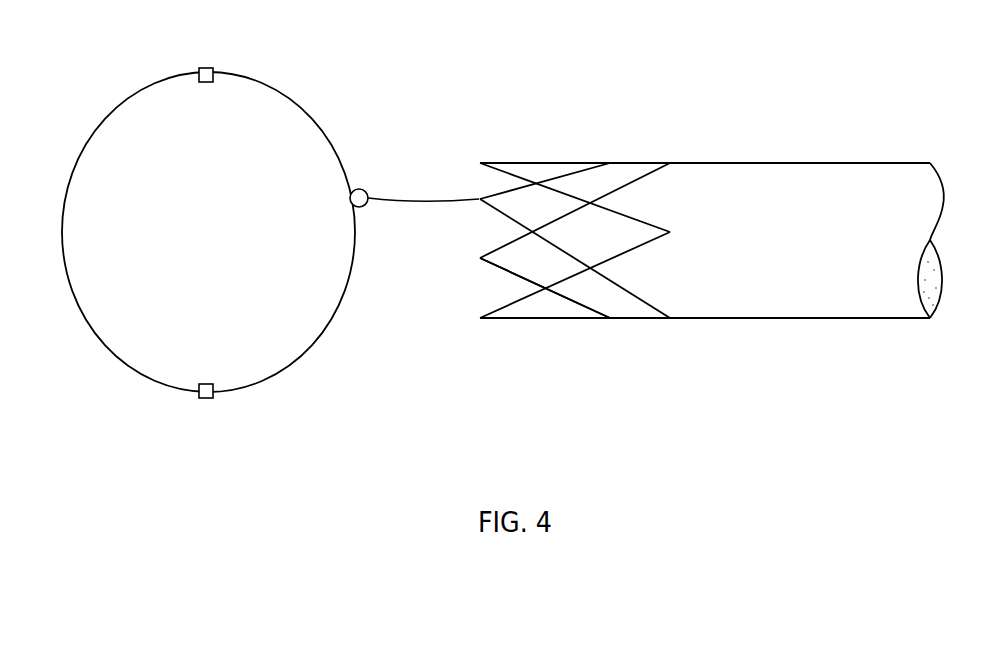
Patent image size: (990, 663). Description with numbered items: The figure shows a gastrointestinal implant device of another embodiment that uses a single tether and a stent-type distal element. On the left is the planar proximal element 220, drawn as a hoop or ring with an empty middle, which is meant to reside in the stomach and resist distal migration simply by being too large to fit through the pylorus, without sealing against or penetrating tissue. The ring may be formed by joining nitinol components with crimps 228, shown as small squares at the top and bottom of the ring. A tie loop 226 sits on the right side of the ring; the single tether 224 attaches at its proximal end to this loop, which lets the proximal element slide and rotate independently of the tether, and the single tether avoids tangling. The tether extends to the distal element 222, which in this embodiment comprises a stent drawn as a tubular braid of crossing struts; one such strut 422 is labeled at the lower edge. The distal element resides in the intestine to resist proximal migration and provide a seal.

The planar proximal element 220 is at (253, 80).
The distal element 222 is at (642, 137).
The tether 224 is at (383, 200).
The tie loop 226 is at (360, 189).
The crimps 228 is at (205, 67).
The stent strut 422 is at (572, 322).